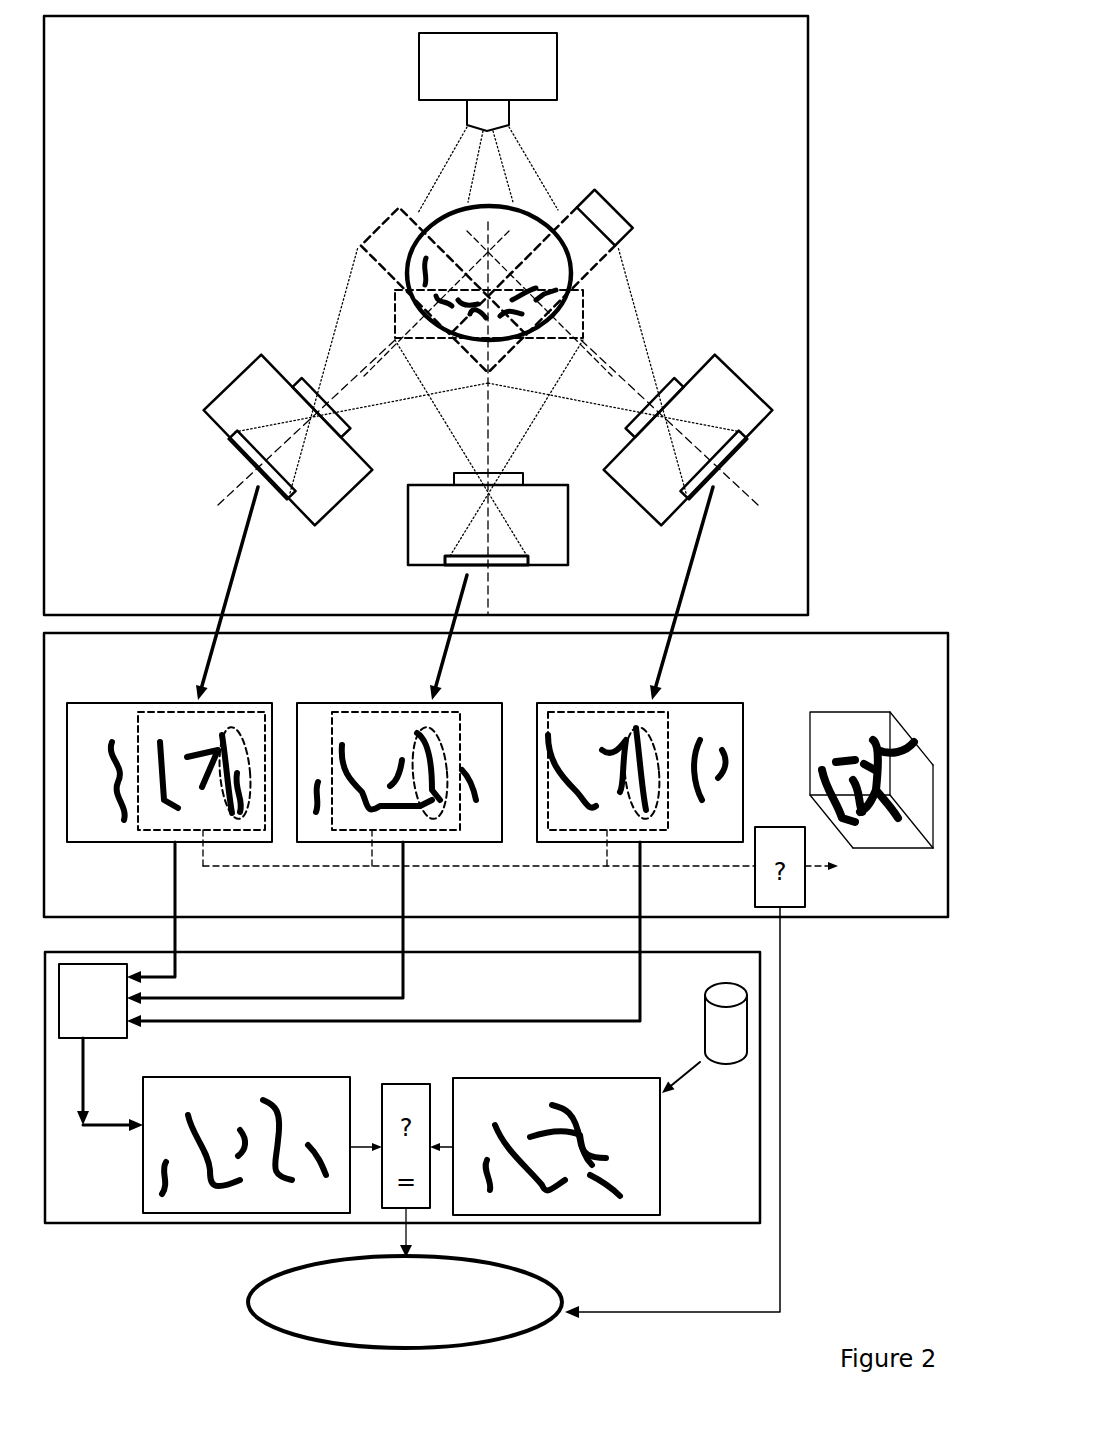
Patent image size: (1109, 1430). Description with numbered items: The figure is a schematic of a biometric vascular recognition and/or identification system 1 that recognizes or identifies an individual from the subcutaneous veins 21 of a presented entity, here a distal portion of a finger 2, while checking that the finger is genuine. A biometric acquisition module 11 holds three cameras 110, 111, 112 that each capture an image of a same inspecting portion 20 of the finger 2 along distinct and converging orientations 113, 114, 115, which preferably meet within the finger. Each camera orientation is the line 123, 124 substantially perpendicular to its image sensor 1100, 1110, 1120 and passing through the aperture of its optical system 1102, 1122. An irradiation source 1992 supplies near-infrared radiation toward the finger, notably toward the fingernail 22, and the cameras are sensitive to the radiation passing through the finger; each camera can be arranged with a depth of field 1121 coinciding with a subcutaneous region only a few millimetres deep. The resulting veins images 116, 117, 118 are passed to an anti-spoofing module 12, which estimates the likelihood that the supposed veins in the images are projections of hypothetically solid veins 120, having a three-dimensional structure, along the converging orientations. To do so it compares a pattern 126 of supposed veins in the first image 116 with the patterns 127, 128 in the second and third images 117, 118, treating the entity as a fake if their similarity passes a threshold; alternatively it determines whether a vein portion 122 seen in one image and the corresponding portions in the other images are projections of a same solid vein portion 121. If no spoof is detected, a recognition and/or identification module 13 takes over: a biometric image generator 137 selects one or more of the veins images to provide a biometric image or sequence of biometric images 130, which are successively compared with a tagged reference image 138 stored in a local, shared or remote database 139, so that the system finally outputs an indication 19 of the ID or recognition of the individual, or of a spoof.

The biometric vascular recognition and/or identification system 1 is at (895, 59).
The finger 2 is at (410, 201).
The biometric acquisition module 11 is at (808, 270).
The anti-spoofing module 12 is at (850, 918).
The recognition and/or identification module 13 is at (760, 1113).
The indication 19 is at (265, 1300).
The inspecting portion 20 is at (503, 338).
The subcutaneous veins 21 is at (550, 296).
The fingernail 22 is at (420, 248).
The camera 110 is at (233, 408).
The camera 111 is at (542, 520).
The camera 112 is at (753, 412).
The converging orientation 113 is at (233, 482).
The converging orientation 114 is at (487, 565).
The converging orientation 115 is at (752, 500).
The veins image 116 is at (127, 703).
The veins image 117 is at (375, 703).
The veins image 118 is at (608, 700).
The solid veins 120 is at (815, 721).
The solid vein portion 121 is at (875, 732).
The portion of a supposed subcutaneous vein 122 is at (245, 808).
The converging orientation 123 is at (438, 815).
The converging orientation 124 is at (653, 817).
The pattern of supposed subcutaneous veins 126 is at (155, 830).
The pattern of supposed subcutaneous veins 127 is at (352, 830).
The pattern of supposed subcutaneous veins 128 is at (580, 830).
The biometric image 130 is at (147, 1173).
The biometric image generator 137 is at (103, 1017).
The reference image 138 is at (650, 1165).
The database 139 is at (725, 1045).
The image sensor 1100 is at (280, 493).
The optical system 1102 is at (302, 380).
The image sensor 1110 is at (448, 565).
The image sensor 1120 is at (728, 458).
The depth of field 1121 is at (618, 208).
The optical system 1122 is at (672, 397).
The irradiation source 1992 is at (545, 62).